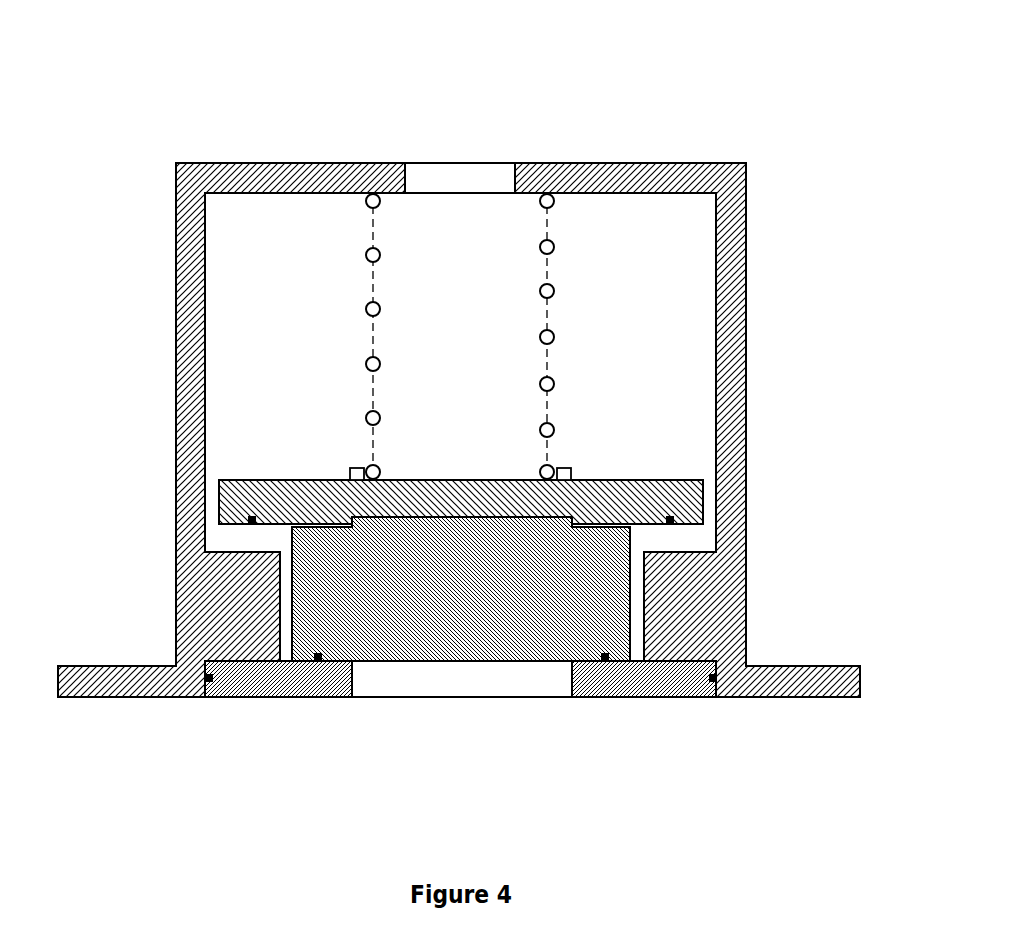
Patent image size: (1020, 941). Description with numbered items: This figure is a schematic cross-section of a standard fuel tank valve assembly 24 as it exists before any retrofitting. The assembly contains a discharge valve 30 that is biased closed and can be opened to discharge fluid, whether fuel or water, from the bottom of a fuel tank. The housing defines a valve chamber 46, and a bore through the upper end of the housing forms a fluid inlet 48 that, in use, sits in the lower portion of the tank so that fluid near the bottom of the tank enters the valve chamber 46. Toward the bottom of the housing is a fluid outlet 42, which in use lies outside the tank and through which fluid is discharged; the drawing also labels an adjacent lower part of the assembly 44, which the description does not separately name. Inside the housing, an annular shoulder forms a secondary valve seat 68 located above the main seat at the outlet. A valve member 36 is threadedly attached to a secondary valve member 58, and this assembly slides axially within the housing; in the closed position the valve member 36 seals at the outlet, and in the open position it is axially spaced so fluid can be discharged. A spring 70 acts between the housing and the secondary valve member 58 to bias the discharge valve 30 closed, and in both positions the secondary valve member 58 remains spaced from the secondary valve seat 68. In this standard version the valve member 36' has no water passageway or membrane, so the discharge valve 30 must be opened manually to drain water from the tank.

The fuel tank valve assembly 24 is at (566, 84).
The discharge valve 30 is at (640, 590).
The valve member 36 is at (278, 717).
The valve member 36' is at (461, 640).
The fluid outlet 42 is at (415, 687).
The lower plate 44 is at (718, 697).
The valve chamber 46 is at (680, 306).
The fluid inlet 48 is at (445, 181).
The secondary valve member 58 is at (683, 500).
The secondary valve seat 68 is at (223, 556).
The spring 70 is at (554, 247).